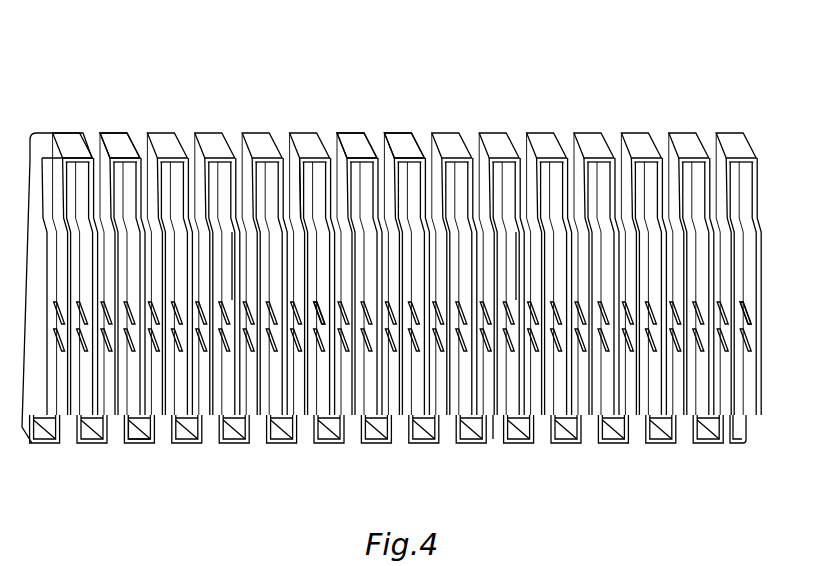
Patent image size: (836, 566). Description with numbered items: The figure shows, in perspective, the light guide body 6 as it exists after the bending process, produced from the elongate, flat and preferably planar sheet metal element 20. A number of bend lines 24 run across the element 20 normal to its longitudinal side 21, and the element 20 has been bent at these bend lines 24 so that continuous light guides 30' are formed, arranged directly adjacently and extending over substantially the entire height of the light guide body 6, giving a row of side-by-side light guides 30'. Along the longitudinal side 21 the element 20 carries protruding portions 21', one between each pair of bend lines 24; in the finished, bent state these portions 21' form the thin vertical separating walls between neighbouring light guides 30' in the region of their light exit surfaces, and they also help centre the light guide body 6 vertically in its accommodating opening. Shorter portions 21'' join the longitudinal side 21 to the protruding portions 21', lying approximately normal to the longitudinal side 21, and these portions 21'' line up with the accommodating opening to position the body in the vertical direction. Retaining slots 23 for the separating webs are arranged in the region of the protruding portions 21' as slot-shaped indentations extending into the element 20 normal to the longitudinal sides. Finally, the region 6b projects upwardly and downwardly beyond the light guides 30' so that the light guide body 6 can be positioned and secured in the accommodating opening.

The light guide body 6 is at (680, 66).
The region 6b is at (340, 160).
The element 20 is at (291, 197).
The longitudinal side 21 is at (404, 130).
The protruding portions 21' is at (231, 372).
The portions connecting longitudinal side portions to protruding portions 21'' is at (516, 285).
The retaining slots 23 is at (330, 308).
The bend lines 24 is at (137, 140).
The light guides 30' is at (380, 385).